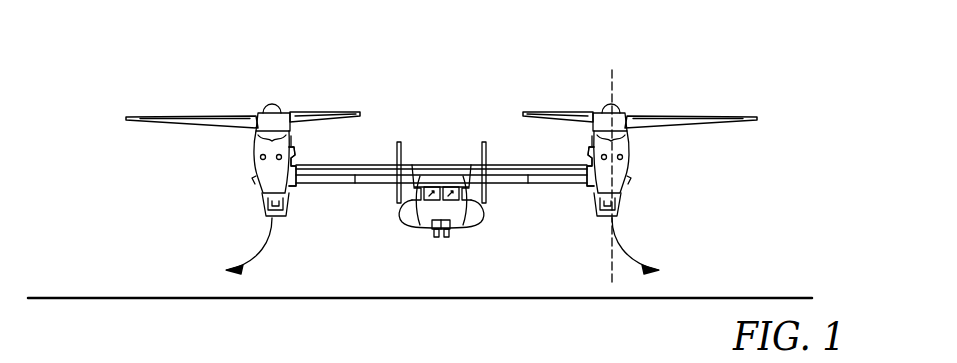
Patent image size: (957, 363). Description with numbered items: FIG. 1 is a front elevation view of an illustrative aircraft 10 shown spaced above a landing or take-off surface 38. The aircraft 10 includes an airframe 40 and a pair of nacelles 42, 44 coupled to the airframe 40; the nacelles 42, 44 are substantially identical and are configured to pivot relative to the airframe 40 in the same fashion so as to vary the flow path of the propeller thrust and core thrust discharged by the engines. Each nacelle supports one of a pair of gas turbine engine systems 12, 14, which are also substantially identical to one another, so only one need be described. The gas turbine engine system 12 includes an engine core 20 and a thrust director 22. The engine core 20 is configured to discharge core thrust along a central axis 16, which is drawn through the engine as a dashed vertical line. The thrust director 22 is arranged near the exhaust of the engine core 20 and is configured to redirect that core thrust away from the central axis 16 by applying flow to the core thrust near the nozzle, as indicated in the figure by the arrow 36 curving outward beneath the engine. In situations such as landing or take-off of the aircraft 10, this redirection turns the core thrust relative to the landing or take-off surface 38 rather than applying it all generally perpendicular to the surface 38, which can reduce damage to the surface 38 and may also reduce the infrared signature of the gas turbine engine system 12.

The aircraft 10 is at (540, 96).
The gas turbine engine system 12 is at (668, 115).
The gas turbine engine system 14 is at (202, 112).
The central axis 16 is at (612, 78).
The engine core 20 is at (630, 134).
The thrust director 22 is at (628, 205).
The arrow 36 is at (630, 247).
The landing or take-off surface 38 is at (455, 304).
The airframe 40 is at (440, 164).
The nacelle 42 is at (598, 190).
The nacelle 44 is at (285, 189).